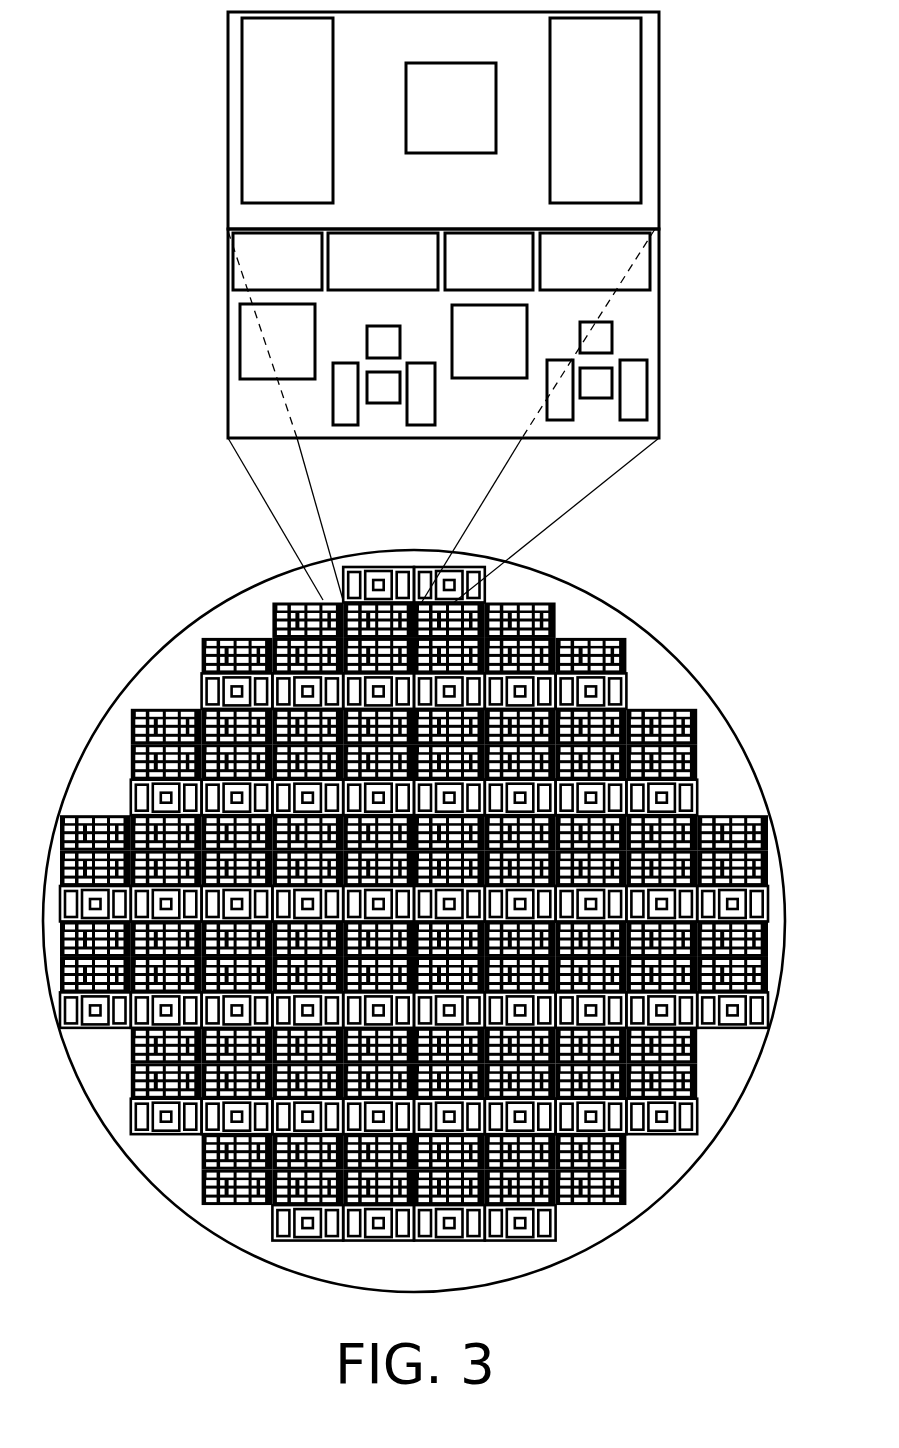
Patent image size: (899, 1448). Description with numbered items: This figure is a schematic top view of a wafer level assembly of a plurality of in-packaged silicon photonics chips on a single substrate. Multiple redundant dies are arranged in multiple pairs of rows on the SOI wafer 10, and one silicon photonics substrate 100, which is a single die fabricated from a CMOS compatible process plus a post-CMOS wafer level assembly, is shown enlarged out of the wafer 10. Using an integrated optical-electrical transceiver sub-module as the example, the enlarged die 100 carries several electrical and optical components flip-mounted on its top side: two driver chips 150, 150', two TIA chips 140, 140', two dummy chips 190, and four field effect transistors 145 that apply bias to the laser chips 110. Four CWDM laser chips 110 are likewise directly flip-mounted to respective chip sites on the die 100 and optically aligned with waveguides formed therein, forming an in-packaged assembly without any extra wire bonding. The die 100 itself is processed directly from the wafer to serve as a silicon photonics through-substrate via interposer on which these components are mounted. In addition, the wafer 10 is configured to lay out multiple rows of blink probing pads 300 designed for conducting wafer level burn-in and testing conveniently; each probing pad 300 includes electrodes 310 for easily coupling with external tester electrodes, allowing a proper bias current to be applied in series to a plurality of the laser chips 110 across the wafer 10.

The SOI wafer 10 is at (188, 626).
The silicon photonics substrate 100 is at (506, 427).
The laser chips 110 is at (433, 420).
The TIA chip 140 is at (383, 261).
The TIA chip 140' is at (595, 261).
The field effect transistors 145 is at (489, 328).
The driver chip 150 is at (277, 261).
The driver chip 150' is at (489, 261).
The dummy chips 190 is at (295, 358).
The blink probing pads 300 is at (501, 45).
The electrodes 310 is at (318, 110).